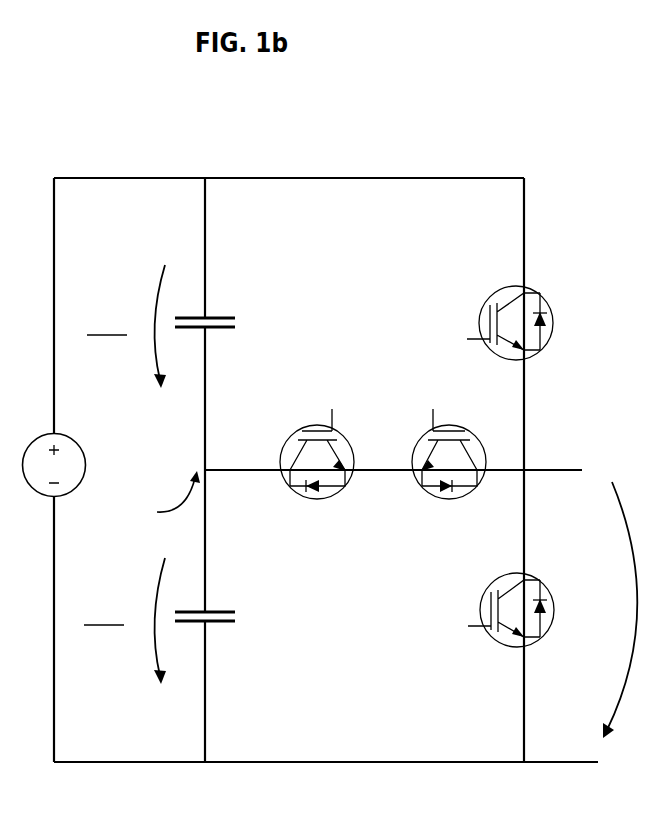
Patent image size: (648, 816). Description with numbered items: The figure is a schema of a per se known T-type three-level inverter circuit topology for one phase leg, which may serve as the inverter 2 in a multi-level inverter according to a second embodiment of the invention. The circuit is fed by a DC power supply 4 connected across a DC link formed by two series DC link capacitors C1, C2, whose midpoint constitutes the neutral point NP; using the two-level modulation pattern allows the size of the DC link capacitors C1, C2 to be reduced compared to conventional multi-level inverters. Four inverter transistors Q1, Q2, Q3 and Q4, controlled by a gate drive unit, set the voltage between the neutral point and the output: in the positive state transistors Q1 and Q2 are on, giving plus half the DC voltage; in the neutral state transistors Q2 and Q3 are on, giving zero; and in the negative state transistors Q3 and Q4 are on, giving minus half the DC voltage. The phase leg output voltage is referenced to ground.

The inverter 2 is at (341, 158).
The DC power supply 4 is at (33, 428).
The transistor Q1 is at (499, 323).
The transistor Q2 is at (307, 454).
The transistor Q3 is at (437, 454).
The transistor Q4 is at (502, 610).
The DC link capacitor C1 is at (206, 316).
The DC link capacitor C2 is at (210, 637).